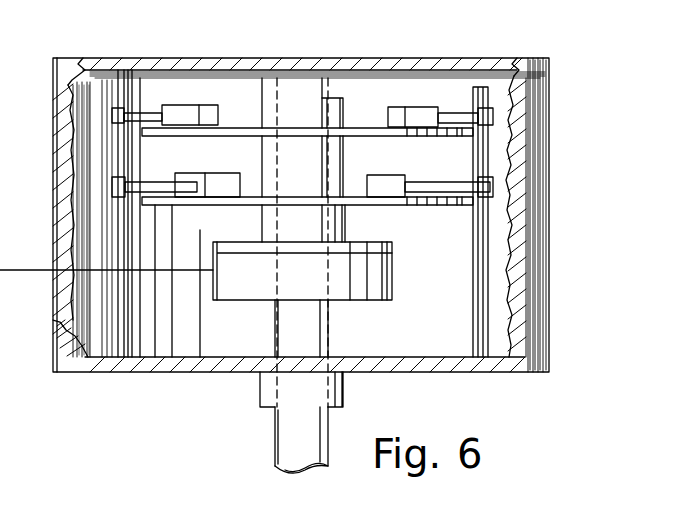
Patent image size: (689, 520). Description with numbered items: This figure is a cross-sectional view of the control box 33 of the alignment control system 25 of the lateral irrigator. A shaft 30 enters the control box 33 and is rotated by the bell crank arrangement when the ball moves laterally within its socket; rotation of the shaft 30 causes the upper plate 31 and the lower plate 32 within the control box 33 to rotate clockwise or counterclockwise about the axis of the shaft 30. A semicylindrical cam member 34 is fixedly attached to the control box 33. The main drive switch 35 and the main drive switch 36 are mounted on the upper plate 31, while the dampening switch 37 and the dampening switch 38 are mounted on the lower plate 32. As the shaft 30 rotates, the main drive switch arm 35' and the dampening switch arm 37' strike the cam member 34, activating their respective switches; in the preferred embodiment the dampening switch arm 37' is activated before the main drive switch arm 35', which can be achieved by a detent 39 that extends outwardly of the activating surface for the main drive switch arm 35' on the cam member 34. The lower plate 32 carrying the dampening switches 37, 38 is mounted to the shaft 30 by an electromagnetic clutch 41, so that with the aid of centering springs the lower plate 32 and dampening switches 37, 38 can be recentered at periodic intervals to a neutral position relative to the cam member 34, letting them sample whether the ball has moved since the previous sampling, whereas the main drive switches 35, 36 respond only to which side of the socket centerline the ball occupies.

The alignment control system 25 is at (131, 41).
The shaft 30 is at (279, 431).
The upper plate 31 is at (356, 128).
The lower plate 32 is at (391, 206).
The control box 33 is at (205, 65).
The semicylindrical cam member 34 is at (283, 93).
The main drive switch 35 is at (415, 79).
The main drive switch arm 35' is at (465, 78).
The main drive switch 36 is at (212, 110).
The dampening switch 37 is at (381, 171).
The dampening switch arm 37' is at (449, 171).
The dampening switch 38 is at (217, 173).
The detent 39 is at (117, 173).
The electromagnetic clutch 41 is at (312, 286).